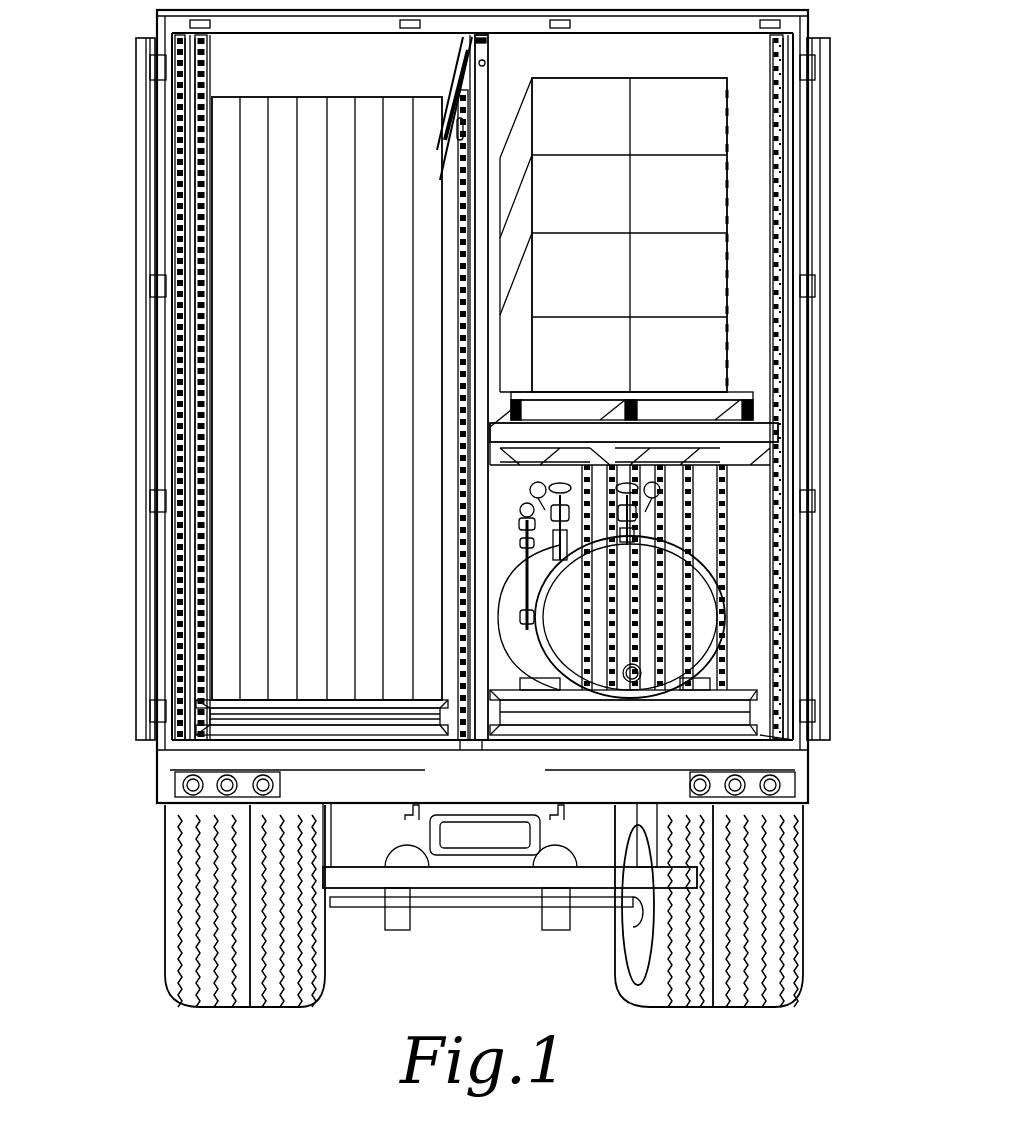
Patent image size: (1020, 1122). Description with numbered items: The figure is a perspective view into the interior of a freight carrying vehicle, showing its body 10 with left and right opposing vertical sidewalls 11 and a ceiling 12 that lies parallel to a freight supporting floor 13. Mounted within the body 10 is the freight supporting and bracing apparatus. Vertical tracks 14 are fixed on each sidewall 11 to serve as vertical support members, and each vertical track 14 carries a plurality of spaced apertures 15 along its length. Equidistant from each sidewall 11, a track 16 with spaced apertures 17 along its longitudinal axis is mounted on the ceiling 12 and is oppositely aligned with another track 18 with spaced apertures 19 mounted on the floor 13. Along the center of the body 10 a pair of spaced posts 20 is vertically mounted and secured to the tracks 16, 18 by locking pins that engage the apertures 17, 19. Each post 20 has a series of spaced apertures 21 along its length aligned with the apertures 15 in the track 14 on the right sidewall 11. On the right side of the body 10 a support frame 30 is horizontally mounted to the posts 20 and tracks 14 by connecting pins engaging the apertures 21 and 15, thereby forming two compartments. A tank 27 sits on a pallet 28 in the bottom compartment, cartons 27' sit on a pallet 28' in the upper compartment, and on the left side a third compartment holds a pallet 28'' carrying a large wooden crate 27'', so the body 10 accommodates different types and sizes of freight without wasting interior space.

The body 10 is at (125, 341).
The vertical sidewall 11 is at (178, 628).
The ceiling 12 is at (330, 76).
The freight supporting floor 13 is at (760, 737).
The vertical track 14 is at (190, 528).
The spaced aperture 15 is at (190, 435).
The track 16 is at (490, 45).
The spaced aperture 17 is at (465, 95).
The track 18 is at (482, 740).
The spaced aperture 19 is at (460, 738).
The post 20 is at (470, 570).
The spaced aperture 21 is at (458, 515).
The tank 27 is at (611, 590).
The carton 27' is at (613, 235).
The wooden crate 27'' is at (326, 398).
The pallet 28 is at (623, 728).
The pallet 28' is at (621, 387).
The pallet 28'' is at (322, 693).
The support frame 30 is at (752, 452).